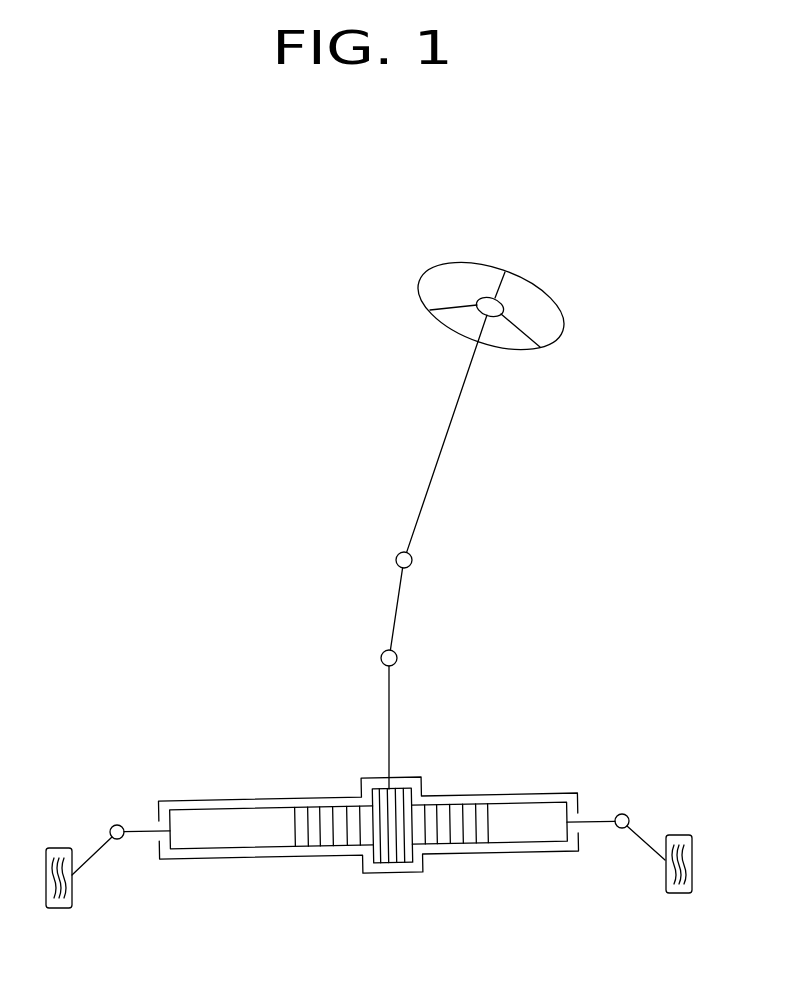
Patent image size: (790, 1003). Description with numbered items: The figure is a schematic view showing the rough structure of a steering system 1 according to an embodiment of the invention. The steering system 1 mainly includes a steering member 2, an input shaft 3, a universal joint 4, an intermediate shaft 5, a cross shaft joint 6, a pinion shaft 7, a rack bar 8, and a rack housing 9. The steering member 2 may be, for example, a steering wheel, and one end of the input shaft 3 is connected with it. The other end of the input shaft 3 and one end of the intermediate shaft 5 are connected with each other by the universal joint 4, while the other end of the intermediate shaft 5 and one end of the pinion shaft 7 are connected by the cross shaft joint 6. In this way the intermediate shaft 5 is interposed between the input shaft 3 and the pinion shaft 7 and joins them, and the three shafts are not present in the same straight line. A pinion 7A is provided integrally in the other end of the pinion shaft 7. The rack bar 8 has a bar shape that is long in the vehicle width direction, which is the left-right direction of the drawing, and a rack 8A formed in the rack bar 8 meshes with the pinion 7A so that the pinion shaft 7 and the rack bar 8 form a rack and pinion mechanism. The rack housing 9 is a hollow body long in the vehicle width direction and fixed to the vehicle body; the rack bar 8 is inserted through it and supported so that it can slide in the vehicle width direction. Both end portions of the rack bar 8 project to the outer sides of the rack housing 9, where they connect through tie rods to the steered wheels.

The steering system 1 is at (582, 261).
The steering member 2 is at (483, 263).
The input shaft 3 is at (456, 412).
The universal joint 4 is at (412, 559).
The intermediate shaft 5 is at (396, 608).
The cross shaft joint 6 is at (396, 655).
The pinion shaft 7 is at (393, 728).
The pinion 7A is at (400, 865).
The rack bar 8 is at (369, 862).
The rack 8A is at (342, 845).
The rack housing 9 is at (285, 797).